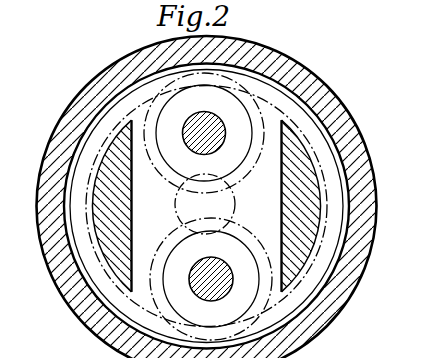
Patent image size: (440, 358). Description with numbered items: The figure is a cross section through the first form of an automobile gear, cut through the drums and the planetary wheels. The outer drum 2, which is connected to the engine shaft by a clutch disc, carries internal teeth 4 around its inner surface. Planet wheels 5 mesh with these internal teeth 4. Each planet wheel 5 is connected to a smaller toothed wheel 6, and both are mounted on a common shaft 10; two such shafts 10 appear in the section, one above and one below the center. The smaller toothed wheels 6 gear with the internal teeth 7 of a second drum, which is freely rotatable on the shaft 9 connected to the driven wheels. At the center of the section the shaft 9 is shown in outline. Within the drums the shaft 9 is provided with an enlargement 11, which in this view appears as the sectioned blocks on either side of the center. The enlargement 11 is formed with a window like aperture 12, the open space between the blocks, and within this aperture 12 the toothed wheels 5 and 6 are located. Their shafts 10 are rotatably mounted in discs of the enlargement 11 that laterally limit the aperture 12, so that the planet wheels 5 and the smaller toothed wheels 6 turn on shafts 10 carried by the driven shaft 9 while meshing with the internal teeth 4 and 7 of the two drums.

The drum 2 is at (268, 53).
The internal teeth 4 is at (78, 227).
The planet wheels 5 is at (112, 308).
The smaller toothed wheels 6 is at (100, 340).
The internal teeth of the second drum 7 is at (85, 192).
The shaft 9 is at (236, 201).
The shafts 10 is at (218, 128).
The enlargement 11 is at (350, 173).
The window like aperture 12 is at (265, 218).